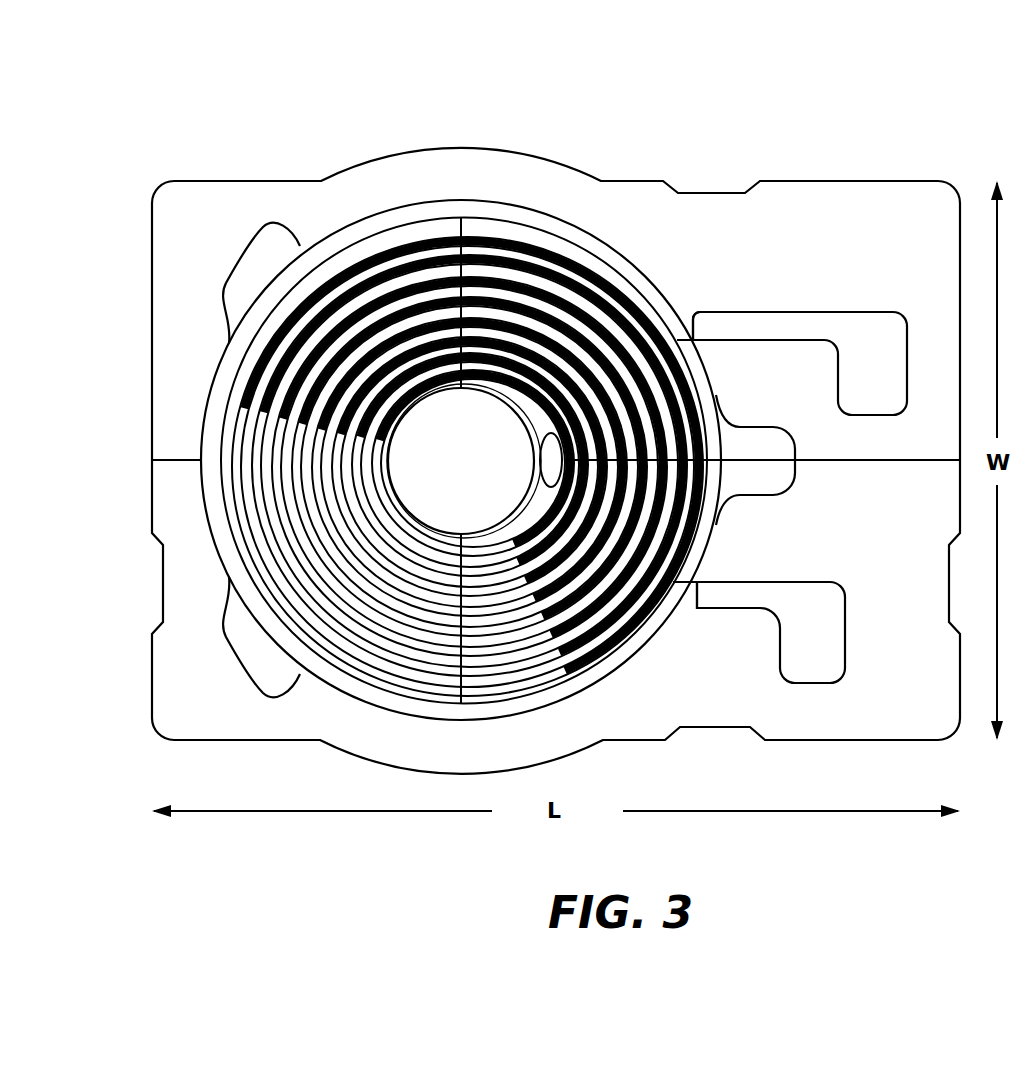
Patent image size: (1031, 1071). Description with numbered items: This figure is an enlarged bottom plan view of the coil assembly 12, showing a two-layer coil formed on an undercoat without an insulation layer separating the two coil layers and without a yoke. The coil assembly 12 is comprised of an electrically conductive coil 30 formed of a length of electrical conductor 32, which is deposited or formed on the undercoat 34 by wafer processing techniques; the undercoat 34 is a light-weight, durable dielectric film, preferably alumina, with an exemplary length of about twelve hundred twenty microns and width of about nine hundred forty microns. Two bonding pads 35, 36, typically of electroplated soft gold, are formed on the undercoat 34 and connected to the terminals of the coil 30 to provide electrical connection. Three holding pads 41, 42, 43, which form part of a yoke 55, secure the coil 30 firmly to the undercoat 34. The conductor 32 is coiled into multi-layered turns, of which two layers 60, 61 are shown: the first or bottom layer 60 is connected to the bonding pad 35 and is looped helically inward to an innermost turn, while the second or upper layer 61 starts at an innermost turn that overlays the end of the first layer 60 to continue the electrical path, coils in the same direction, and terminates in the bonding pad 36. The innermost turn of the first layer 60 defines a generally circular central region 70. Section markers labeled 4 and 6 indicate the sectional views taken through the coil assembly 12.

The coil assembly 12 is at (304, 120).
The section line 4- 4 is at (461, 133).
The coil 30 is at (441, 420).
The electrical conductor 32 is at (283, 574).
The undercoat 34 is at (556, 461).
The bonding pad 35 is at (903, 326).
The bonding pad 36 is at (842, 652).
The holding pad 41 is at (258, 252).
The holding pad 42 is at (257, 665).
The holding pad 43 is at (763, 481).
The yoke 55 is at (214, 334).
The first layer 60 is at (674, 322).
The second layer 61 is at (682, 604).
The central region 70 is at (464, 461).
The section indicator 6 is at (535, 460).